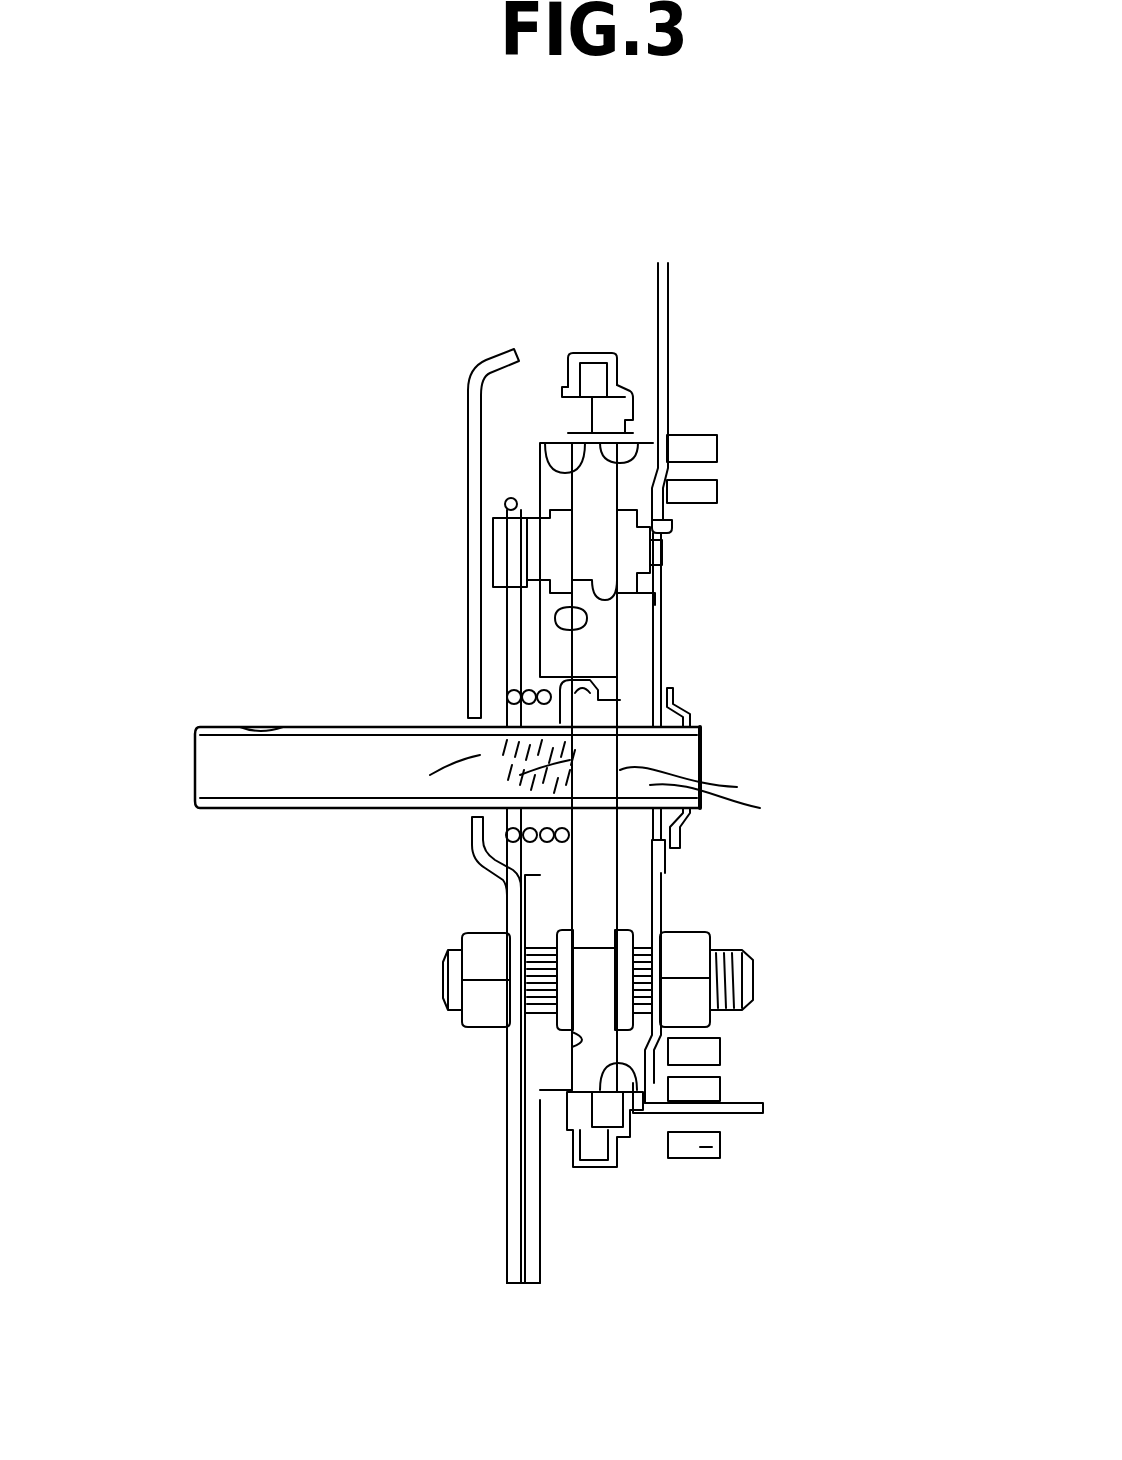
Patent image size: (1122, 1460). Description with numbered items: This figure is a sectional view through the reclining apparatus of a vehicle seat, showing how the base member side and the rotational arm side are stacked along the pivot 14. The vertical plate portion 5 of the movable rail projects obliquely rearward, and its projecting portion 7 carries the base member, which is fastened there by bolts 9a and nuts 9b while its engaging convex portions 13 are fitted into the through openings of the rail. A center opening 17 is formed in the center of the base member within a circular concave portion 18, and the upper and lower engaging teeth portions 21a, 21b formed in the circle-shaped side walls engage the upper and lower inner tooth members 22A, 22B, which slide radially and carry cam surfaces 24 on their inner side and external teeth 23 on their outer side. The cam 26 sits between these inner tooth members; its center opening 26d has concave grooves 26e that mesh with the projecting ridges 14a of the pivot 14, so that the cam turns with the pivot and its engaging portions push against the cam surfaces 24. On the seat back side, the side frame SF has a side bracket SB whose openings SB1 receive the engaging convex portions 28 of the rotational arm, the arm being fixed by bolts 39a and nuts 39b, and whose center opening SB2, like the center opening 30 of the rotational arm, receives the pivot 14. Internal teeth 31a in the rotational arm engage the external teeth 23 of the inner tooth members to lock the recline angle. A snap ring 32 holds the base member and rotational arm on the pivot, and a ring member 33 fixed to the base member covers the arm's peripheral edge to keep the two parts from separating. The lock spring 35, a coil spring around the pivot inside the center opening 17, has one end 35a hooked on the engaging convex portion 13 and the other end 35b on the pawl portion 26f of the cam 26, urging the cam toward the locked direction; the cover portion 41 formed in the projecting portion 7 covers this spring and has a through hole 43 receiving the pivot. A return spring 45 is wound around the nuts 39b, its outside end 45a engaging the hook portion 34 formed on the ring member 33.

The pivot 14 is at (223, 763).
The projecting ridges 14a is at (283, 727).
The cover portion 41 is at (463, 417).
The side frame SF is at (668, 357).
The ring member 33 is at (587, 348).
The external teeth 23 is at (624, 388).
The upper engaging teeth portion 21a is at (529, 450).
The one end of the lock spring 35a is at (500, 500).
The lock spring 35 is at (505, 695).
The engaging convex portion 13 is at (500, 547).
The upper inner tooth member 22A is at (603, 498).
The openings of the side bracket SB1 is at (670, 542).
The engaging convex portion 28 is at (673, 557).
The cam surface 24 is at (655, 594).
The other end of the lock spring 35b is at (600, 677).
The pawl portion 26f is at (687, 715).
The snap ring 32 is at (687, 718).
The center opening of the rotational arm 30 is at (640, 740).
The center opening of the cam 26d is at (737, 787).
The concave grooves 26e is at (760, 808).
The cam 26 is at (660, 870).
The center opening of the side bracket SB2 is at (663, 920).
The side bracket SB is at (665, 922).
The center opening of the base member 17 is at (430, 775).
The through hole 43 is at (520, 775).
The projecting portion 7 is at (518, 895).
The nuts 9b is at (457, 942).
The bolts 9a is at (448, 980).
The bolts 39a is at (755, 980).
The nuts 39b is at (710, 1020).
The circular concave portion 18 is at (583, 1040).
The lower inner tooth member 22B is at (580, 1055).
The lower engaging teeth portion 21b is at (577, 1073).
The internal teeth 31a is at (668, 430).
The return spring 45 is at (723, 1087).
The hook portion 34 is at (745, 1113).
The outside end of the return spring 45a is at (710, 1147).
The vertical plate portion 5 is at (517, 1245).